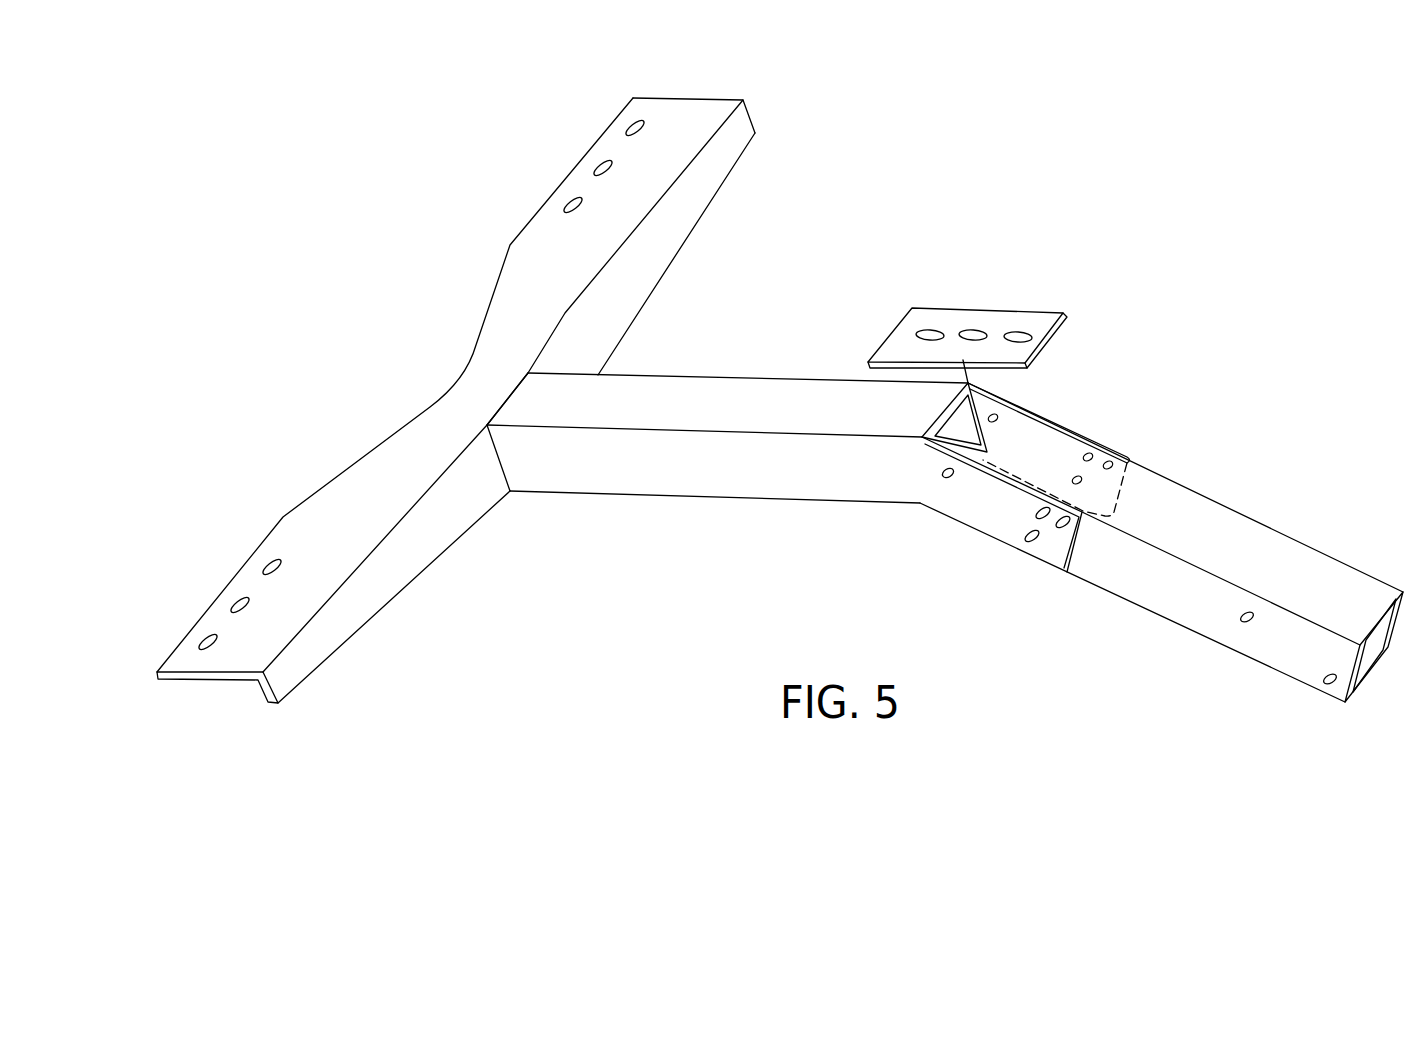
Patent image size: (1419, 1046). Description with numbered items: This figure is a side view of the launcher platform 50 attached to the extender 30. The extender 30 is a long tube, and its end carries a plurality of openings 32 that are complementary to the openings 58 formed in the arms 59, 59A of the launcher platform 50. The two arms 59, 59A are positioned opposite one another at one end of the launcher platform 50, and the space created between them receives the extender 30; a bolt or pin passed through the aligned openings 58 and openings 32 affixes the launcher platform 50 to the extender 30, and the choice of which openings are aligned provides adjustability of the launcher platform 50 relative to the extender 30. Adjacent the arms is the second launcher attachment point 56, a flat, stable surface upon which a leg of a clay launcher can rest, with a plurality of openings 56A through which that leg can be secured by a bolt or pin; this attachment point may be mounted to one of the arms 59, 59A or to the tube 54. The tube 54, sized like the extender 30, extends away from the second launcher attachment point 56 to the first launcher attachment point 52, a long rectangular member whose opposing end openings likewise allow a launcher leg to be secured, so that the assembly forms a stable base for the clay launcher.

The extender 30 is at (1176, 626).
The openings 32 is at (1322, 683).
The launcher platform 50 is at (766, 413).
The first launcher attachment point 52 is at (320, 642).
The tube 54 is at (713, 392).
The second launcher attachment point 56 is at (1043, 317).
The openings 56A is at (1007, 330).
The openings 58 is at (628, 133).
The arm 59 is at (983, 518).
The arm 59A is at (1125, 490).